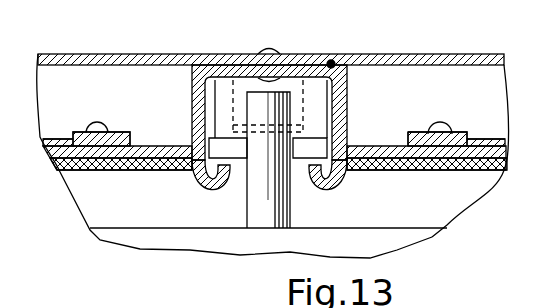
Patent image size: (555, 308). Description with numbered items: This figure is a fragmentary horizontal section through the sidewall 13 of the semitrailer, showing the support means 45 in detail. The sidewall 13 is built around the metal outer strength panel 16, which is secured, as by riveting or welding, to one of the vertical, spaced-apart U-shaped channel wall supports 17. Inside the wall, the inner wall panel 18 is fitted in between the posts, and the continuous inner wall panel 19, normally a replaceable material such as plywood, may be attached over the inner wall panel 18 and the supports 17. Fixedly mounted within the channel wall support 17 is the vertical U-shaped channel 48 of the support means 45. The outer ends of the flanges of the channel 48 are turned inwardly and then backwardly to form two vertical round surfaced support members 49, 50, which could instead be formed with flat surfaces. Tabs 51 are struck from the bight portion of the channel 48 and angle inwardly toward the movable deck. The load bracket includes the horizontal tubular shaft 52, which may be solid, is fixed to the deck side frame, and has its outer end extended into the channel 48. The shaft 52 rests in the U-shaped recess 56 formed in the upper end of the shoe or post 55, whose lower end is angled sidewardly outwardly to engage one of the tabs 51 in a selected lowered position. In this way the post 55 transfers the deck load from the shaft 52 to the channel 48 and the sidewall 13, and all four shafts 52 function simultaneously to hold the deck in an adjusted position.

The sidewall 13 is at (488, 83).
The outer strength panel 16 is at (416, 53).
The U-shaped channel wall support 17 is at (347, 110).
The inner wall panel 18 is at (499, 140).
The continuous inner wall panel 19 is at (475, 170).
The support means 45 is at (242, 227).
The vertical U-shaped channel 48 is at (320, 78).
The vertical round surfaced support member 49 is at (331, 180).
The vertical round surfaced support member 50 is at (247, 160).
The tab 51 is at (308, 87).
The horizontal tubular shaft 52 is at (288, 205).
The post 55 is at (215, 88).
The U-shaped recess 56 is at (192, 138).